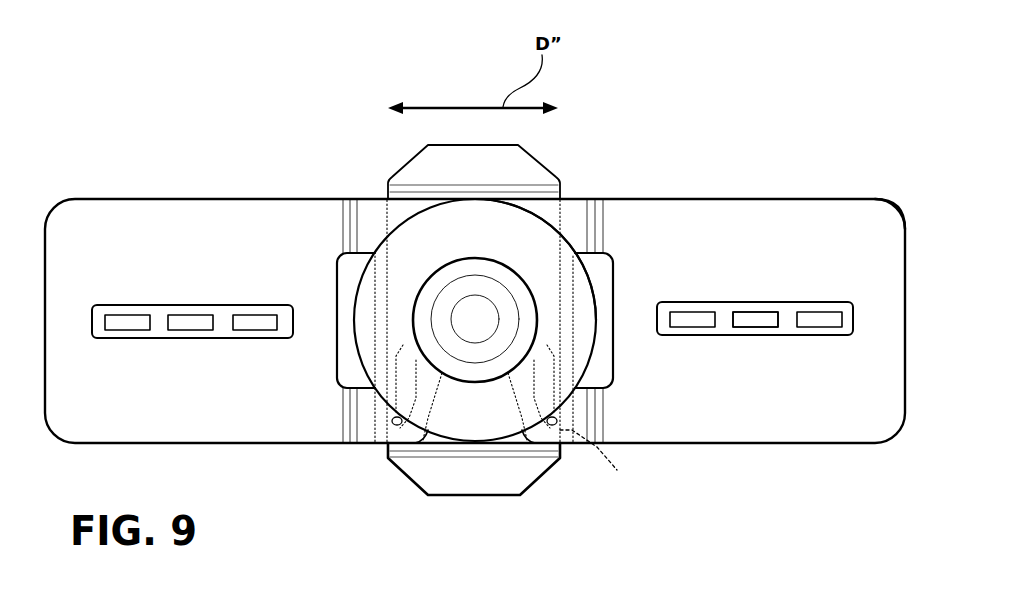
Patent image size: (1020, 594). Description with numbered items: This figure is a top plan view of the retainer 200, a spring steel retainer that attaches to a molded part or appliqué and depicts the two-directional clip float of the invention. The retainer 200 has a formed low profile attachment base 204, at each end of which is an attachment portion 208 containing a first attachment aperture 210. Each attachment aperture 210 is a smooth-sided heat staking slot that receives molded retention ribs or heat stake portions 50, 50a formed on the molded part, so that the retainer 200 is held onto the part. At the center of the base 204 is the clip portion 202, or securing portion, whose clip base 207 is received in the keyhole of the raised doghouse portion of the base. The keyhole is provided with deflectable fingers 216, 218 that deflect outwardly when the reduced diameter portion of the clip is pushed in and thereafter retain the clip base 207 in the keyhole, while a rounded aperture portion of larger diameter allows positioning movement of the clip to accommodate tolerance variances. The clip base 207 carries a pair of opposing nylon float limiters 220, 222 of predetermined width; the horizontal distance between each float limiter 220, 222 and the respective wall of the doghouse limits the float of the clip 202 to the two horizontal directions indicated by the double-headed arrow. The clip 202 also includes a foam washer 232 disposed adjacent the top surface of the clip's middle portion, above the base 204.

The molded retention rib 50 is at (690, 313).
The heat stake portion 50a is at (132, 313).
The retainer 200 is at (596, 474).
The clip portion 202 is at (458, 288).
The attachment base 204 is at (820, 426).
The clip base 207 is at (617, 470).
The attachment portion 208 is at (847, 208).
The first attachment aperture 210 is at (753, 302).
The deflectable finger 216 is at (438, 418).
The deflectable finger 218 is at (512, 418).
The float limiter 220 is at (532, 173).
The float limiter 222 is at (410, 468).
The washer 232 is at (540, 240).